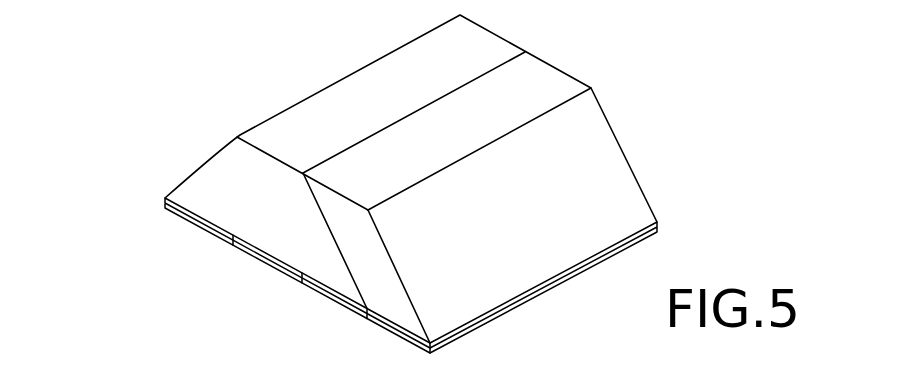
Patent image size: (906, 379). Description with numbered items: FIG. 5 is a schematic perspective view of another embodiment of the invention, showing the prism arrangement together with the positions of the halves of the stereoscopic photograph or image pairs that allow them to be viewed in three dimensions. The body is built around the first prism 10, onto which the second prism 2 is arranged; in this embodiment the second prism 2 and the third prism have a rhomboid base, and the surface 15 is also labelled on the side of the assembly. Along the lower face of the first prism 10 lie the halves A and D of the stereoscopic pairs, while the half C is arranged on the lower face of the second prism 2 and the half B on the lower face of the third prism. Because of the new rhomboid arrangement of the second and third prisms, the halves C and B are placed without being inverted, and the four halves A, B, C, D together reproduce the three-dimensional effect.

The second prism 2 is at (248, 182).
The first prism 10 is at (298, 227).
The side surface 15 is at (373, 267).
The half A of the stereoscopic pair A is at (263, 262).
The half B of the stereoscopic pair B is at (407, 338).
The half C of the stereoscopic pair C is at (197, 227).
The half D of the stereoscopic pair D is at (320, 293).